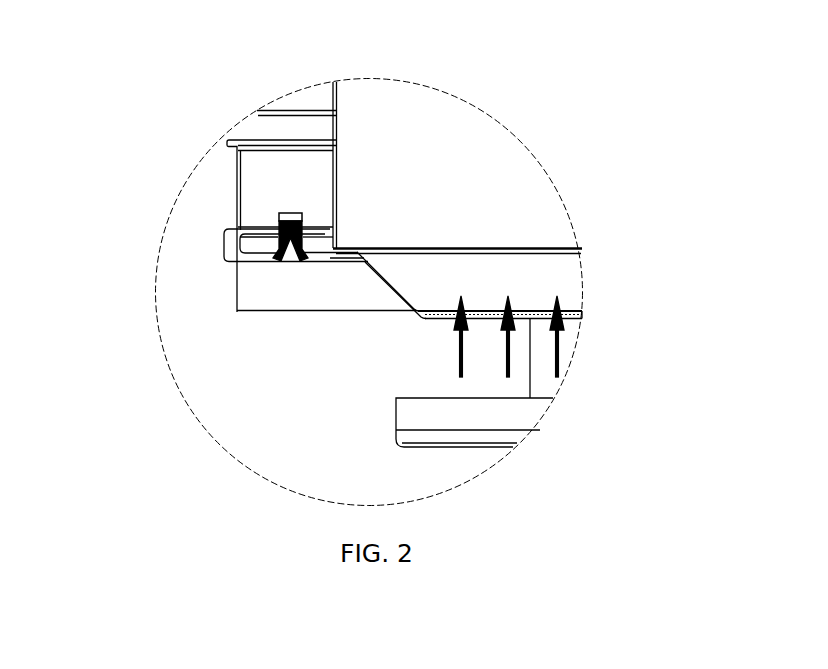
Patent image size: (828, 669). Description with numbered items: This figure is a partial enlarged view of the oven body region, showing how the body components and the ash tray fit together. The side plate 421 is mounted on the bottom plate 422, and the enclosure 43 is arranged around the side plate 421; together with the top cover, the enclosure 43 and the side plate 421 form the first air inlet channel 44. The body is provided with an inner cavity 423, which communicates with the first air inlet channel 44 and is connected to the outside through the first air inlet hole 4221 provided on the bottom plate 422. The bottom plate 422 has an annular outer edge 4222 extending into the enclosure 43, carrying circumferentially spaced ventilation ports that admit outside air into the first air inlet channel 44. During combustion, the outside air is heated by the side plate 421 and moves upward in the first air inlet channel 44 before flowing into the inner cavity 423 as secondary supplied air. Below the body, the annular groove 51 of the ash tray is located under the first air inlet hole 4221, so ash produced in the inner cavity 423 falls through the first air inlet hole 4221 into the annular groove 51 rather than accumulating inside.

The side plate 421 is at (334, 110).
The first air inlet channel 44 is at (257, 193).
The enclosure 43 is at (226, 250).
The annular outer edge 4222 is at (267, 253).
The inner cavity 423 is at (505, 228).
The bottom plate 422 is at (483, 292).
The first air inlet hole 4221 is at (563, 321).
The annular groove 51 is at (470, 435).